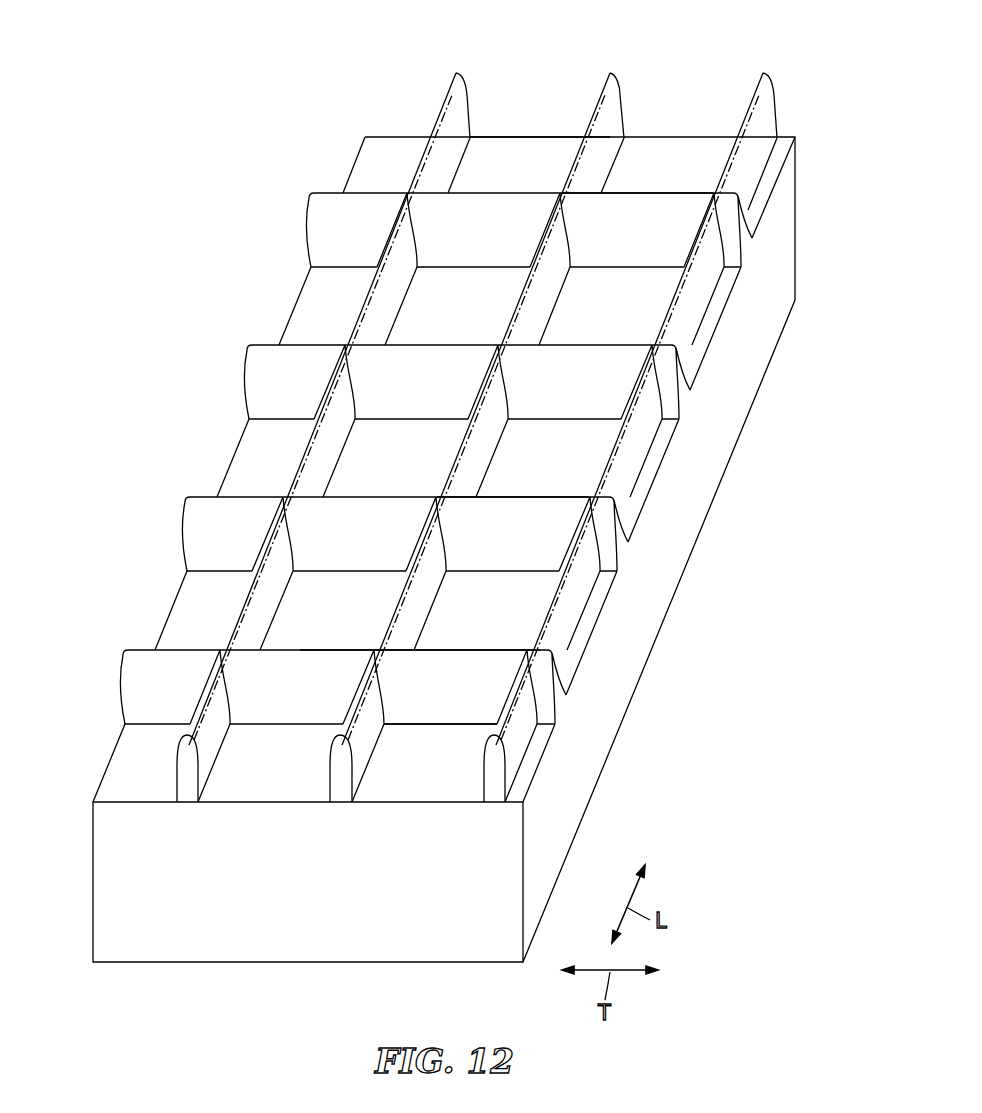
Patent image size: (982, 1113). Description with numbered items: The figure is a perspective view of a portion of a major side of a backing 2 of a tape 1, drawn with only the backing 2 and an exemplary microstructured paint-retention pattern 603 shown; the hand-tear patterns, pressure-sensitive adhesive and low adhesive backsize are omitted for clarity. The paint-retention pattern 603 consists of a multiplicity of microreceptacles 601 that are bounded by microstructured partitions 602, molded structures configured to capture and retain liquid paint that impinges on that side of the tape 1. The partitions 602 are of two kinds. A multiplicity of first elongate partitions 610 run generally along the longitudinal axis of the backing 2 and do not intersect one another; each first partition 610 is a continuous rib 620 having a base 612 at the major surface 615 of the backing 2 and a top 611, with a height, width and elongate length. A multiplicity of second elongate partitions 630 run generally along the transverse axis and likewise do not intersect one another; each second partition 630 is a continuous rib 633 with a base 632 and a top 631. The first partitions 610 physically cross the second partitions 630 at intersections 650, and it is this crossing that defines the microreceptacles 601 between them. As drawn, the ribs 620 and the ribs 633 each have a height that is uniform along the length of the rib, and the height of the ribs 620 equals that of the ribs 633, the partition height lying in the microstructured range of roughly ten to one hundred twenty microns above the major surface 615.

The tape 1 is at (198, 30).
The backing 2 is at (693, 508).
The microreceptacles 601 is at (405, 328).
The microstructured partitions 602 is at (355, 313).
The microstructured paint-retention pattern 603 is at (185, 515).
The first elongate partitions 610 is at (425, 115).
The top 611 is at (453, 87).
The base 612 is at (466, 148).
The major surface 615 is at (528, 148).
The first elongate ribs 620 is at (300, 448).
The second elongate partitions 630 is at (120, 652).
The top 631 is at (500, 650).
The base 632 is at (438, 724).
The second elongate ribs 633 is at (643, 193).
The intersections 650 is at (373, 650).